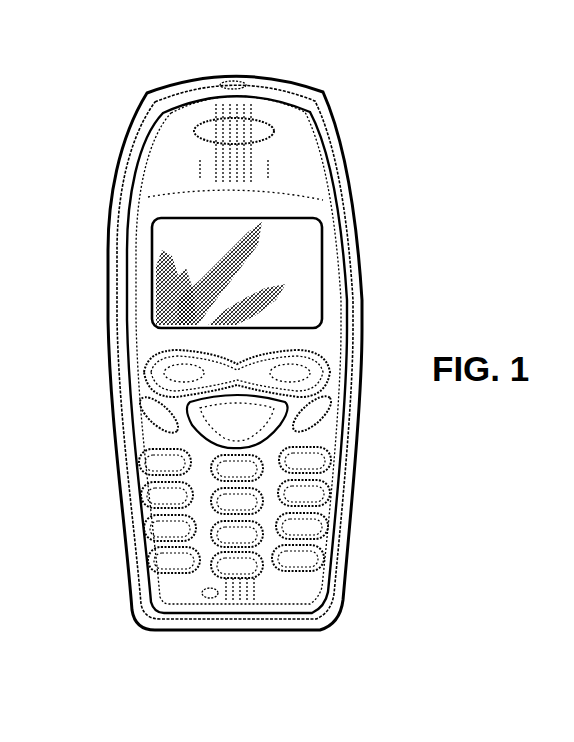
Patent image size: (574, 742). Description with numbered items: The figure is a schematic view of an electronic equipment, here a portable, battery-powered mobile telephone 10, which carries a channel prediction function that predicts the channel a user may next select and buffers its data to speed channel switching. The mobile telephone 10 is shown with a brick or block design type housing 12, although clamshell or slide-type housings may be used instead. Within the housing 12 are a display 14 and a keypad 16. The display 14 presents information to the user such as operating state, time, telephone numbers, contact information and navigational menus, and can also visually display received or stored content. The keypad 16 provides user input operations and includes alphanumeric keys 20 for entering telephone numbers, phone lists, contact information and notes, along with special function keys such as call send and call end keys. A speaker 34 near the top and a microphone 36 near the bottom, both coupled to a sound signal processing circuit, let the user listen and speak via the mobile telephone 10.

The mobile telephone 10 is at (96, 59).
The housing 12 is at (123, 162).
The display 14 is at (160, 242).
The keypad 16 is at (137, 516).
The alphanumeric keys 20 is at (160, 458).
The speaker 34 is at (213, 138).
The microphone 36 is at (213, 597).